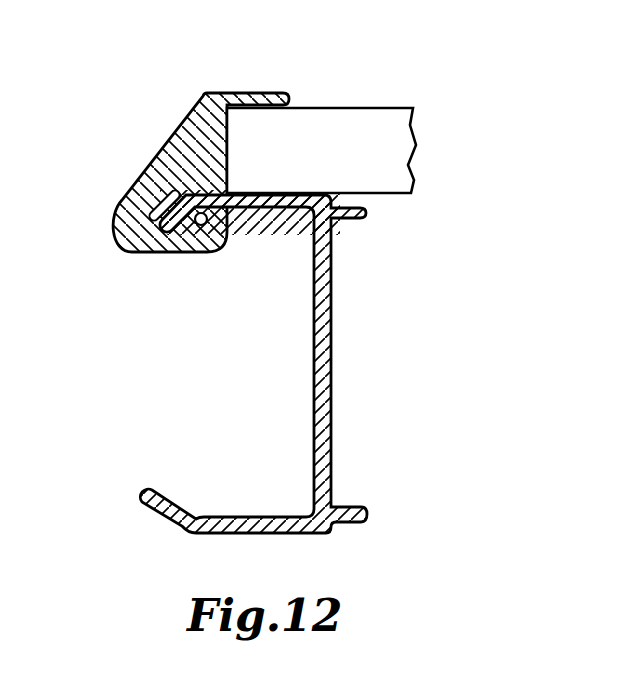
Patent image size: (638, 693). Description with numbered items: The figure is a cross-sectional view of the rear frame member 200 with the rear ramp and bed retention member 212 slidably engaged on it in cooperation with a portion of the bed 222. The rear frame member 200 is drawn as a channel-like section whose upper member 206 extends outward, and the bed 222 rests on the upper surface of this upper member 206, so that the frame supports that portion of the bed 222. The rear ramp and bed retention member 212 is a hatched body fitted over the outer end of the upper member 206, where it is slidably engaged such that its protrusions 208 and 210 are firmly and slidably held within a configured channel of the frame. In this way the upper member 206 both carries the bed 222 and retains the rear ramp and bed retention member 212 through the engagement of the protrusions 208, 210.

The rear frame member 200 is at (307, 361).
The upper member 206 is at (273, 208).
The protrusion 208 is at (143, 253).
The protrusion 210 is at (211, 253).
The rear ramp and bed retention member 212 is at (189, 176).
The bed 222 is at (382, 107).